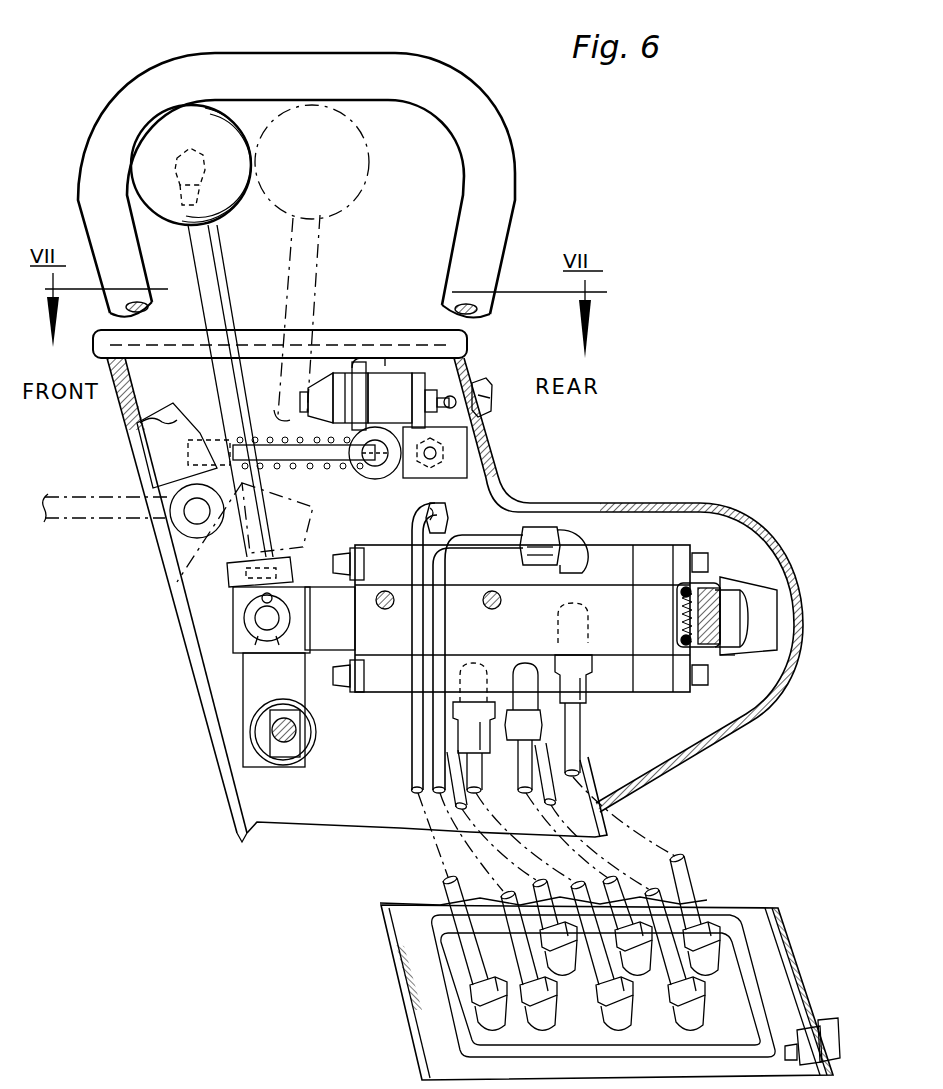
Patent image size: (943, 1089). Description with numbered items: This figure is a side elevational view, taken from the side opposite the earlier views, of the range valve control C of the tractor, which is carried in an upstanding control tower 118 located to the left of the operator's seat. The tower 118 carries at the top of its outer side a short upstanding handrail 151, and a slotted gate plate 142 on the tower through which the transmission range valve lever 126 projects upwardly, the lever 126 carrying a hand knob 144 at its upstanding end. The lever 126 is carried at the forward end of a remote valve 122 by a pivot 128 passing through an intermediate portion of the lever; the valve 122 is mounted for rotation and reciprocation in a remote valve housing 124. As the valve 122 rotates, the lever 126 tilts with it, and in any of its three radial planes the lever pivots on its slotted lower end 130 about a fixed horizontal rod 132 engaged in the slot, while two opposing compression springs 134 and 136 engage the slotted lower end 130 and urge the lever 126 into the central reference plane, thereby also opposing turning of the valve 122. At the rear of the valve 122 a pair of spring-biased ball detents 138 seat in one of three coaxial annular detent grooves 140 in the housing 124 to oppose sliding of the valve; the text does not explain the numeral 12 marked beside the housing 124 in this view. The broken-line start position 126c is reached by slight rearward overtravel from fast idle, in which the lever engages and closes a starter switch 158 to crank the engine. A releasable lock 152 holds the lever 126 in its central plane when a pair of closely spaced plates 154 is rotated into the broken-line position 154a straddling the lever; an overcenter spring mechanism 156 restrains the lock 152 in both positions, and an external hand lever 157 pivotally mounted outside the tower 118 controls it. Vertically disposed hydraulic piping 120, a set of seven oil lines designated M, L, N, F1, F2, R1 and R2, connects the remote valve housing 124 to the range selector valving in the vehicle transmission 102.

The handrail 151 is at (474, 120).
The hand knob 144 is at (212, 123).
The range valve control C is at (538, 203).
The transmission range valve lever 126 is at (220, 268).
The start position of valve lever 126c is at (317, 260).
The slotted gate plate 142 is at (337, 330).
The control tower 118 is at (182, 628).
The hydraulic piping 120 is at (407, 790).
The plates 154 is at (150, 417).
The broken line position of plates 154a is at (195, 558).
The external hand lever 157 is at (100, 486).
The releasable lock 152 is at (176, 520).
The overcenter spring mechanism 156 is at (320, 468).
The starter switch 158 is at (410, 406).
The oil line N is at (426, 503).
The oil line F2 is at (543, 527).
The oil line R2 is at (577, 545).
The remote valve 122 is at (330, 653).
The ball detents 138 is at (677, 600).
The remote valve housing 124 is at (725, 577).
The detent grooves 140 is at (722, 625).
The housing 12 is at (733, 648).
The pivot 128 is at (253, 620).
The slotted lower end 130 is at (255, 755).
The fixed horizontal rod 132 is at (270, 722).
The compression spring 134 is at (305, 742).
The compression spring 136 is at (291, 762).
The oil line M is at (460, 730).
The oil line F1 is at (530, 762).
The oil line R1 is at (540, 795).
The oil line L is at (583, 735).
The vehicle transmission 102 is at (392, 961).